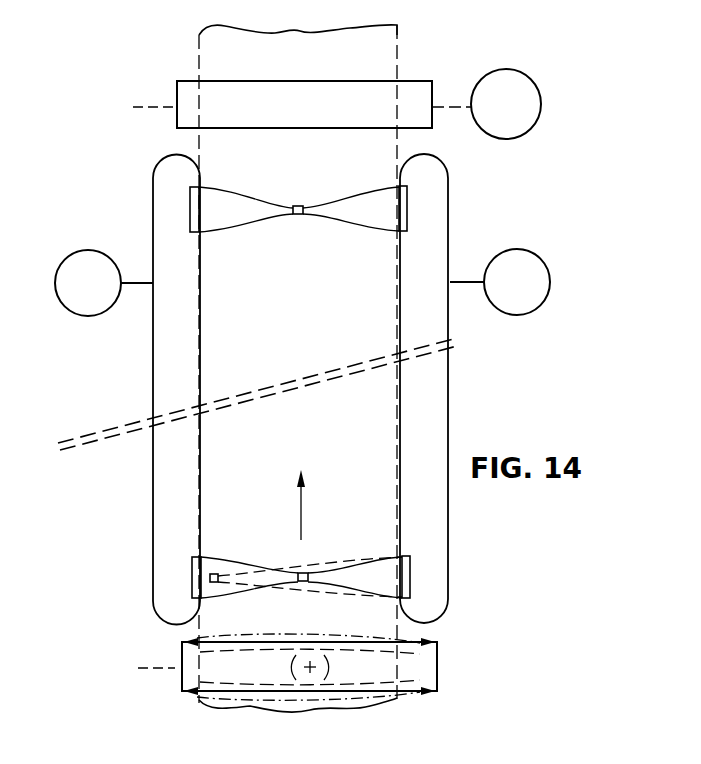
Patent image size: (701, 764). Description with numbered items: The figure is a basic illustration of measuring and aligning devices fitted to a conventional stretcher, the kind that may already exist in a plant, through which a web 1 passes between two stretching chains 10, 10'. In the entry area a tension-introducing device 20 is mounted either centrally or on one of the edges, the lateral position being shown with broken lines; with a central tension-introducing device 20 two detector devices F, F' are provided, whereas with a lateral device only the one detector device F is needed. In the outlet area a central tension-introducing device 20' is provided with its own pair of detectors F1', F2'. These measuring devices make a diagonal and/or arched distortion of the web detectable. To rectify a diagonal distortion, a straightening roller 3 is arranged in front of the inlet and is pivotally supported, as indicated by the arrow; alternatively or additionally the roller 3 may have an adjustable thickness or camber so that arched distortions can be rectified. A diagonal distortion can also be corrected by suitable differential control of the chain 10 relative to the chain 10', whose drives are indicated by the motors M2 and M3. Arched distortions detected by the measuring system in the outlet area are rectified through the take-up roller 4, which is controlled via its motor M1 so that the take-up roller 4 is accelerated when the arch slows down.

The web 1 is at (298, 368).
The straightening roller 3 is at (427, 656).
The take-up roller 4 is at (424, 88).
The stretching chain 10 is at (459, 388).
The stretching chain 10' is at (134, 388).
The tension-introducing device 20 is at (301, 550).
The central tension-introducing device 20' is at (299, 195).
The detector device F is at (438, 580).
The detector device F' is at (160, 581).
The detector F1' is at (441, 216).
The detector F2' is at (155, 212).
The motor M1 is at (506, 104).
The motor M2 is at (500, 282).
The motor M3 is at (104, 283).